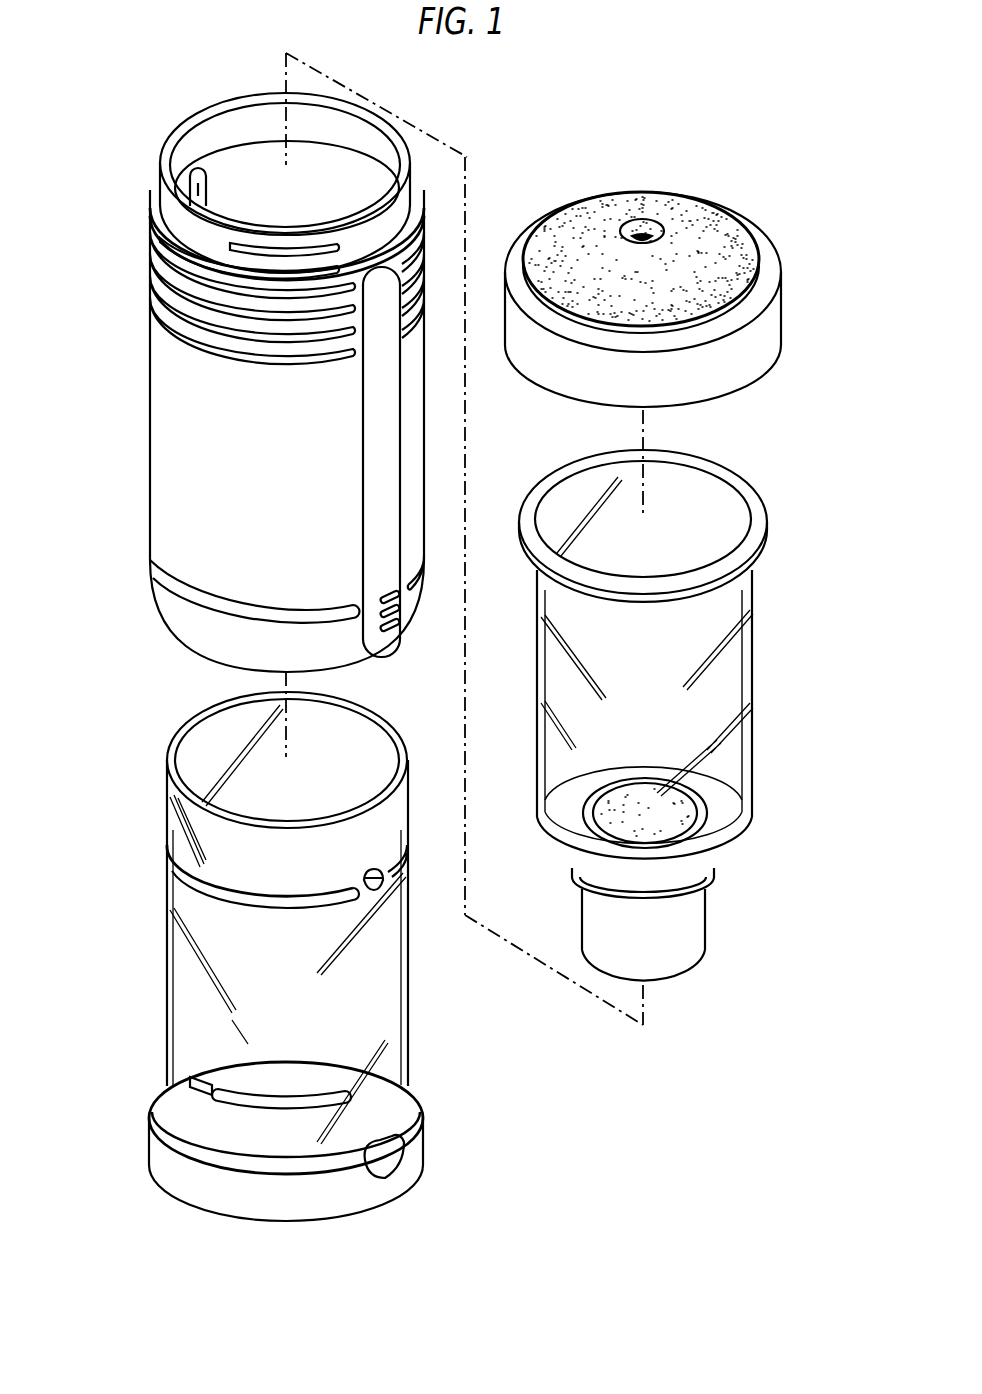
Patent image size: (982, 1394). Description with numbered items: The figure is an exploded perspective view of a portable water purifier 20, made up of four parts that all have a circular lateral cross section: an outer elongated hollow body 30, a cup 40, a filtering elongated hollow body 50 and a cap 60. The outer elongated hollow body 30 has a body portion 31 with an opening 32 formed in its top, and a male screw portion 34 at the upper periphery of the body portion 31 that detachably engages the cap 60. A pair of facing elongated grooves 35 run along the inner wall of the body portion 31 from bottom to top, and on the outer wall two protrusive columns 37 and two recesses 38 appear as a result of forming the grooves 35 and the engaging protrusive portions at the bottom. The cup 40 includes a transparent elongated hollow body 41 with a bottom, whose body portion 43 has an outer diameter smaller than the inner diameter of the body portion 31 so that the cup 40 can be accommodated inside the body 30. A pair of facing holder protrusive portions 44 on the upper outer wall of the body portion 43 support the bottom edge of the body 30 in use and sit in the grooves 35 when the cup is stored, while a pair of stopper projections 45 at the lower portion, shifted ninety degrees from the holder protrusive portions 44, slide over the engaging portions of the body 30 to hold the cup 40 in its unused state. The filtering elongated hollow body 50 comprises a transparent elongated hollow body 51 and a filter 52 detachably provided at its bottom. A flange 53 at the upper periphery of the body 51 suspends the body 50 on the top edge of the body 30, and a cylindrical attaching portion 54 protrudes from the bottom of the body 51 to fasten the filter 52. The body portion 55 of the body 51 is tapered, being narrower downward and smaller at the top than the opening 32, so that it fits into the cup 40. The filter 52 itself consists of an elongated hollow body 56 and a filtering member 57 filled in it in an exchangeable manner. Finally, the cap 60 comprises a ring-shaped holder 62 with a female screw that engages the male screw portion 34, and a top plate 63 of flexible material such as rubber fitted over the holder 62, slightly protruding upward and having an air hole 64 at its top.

The portable water purifier 20 is at (520, 85).
The outer elongated hollow body 30 is at (140, 388).
The body portion 31 is at (175, 476).
The opening 32 is at (211, 133).
The male screw portion 34 is at (160, 216).
The elongated groove 35 is at (187, 172).
The protrusive column 37 is at (387, 415).
The recess 38 is at (420, 572).
The cup 40 is at (156, 903).
The transparent elongated hollow body 41 is at (380, 975).
The body portion 43 is at (165, 967).
The holder protrusive portion 44 is at (378, 888).
The stopper projection 45 is at (195, 1092).
The filtering elongated hollow body 50 is at (764, 655).
The transparent elongated hollow body 51 is at (730, 757).
The filter 52 is at (722, 939).
The flange 53 is at (757, 512).
The cylindrical attaching portion 54 is at (695, 877).
The body portion 55 is at (535, 748).
The elongated hollow body 56 is at (686, 949).
The filtering member 57 is at (700, 820).
The cap 60 is at (750, 209).
The ring-shaped holder 62 is at (768, 328).
The top plate 63 is at (597, 222).
The air hole 64 is at (639, 230).